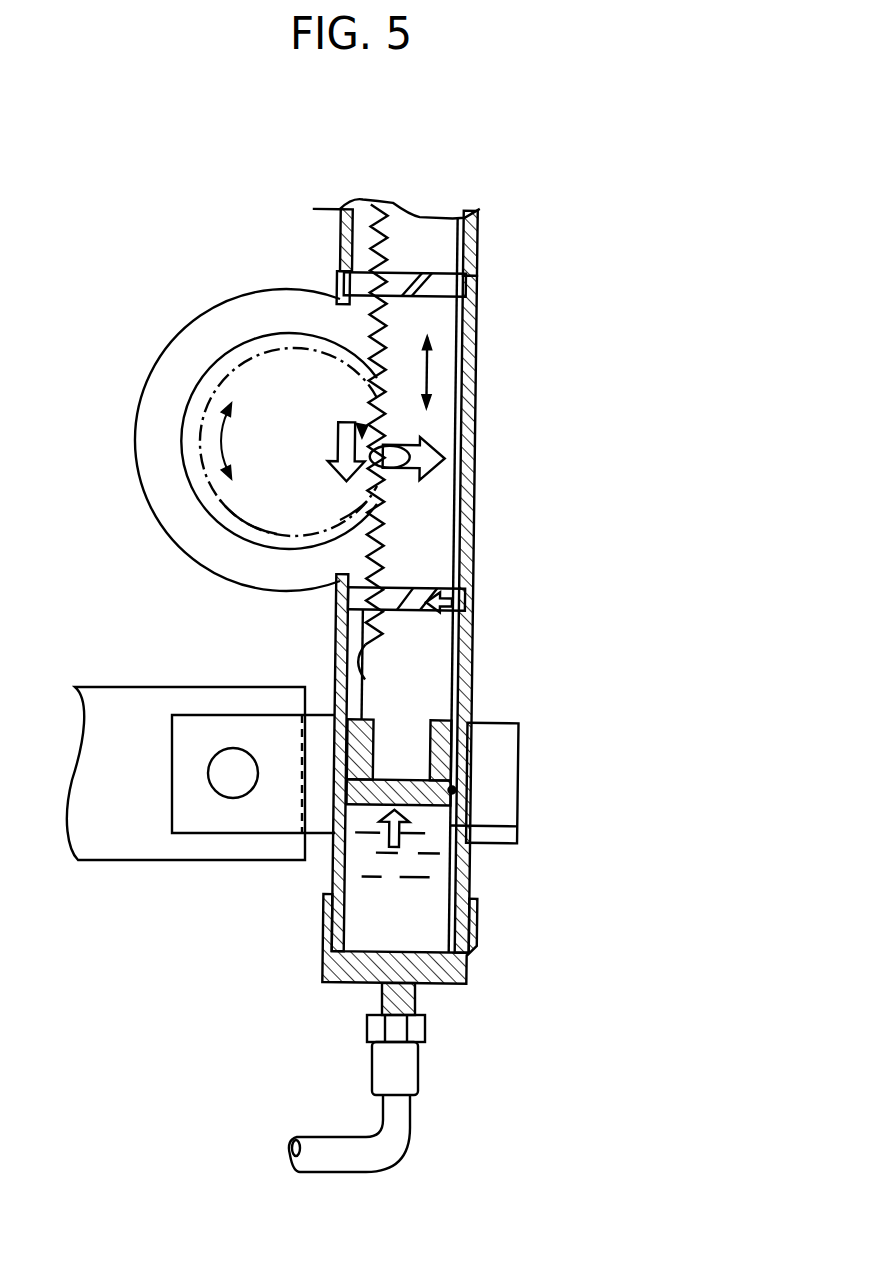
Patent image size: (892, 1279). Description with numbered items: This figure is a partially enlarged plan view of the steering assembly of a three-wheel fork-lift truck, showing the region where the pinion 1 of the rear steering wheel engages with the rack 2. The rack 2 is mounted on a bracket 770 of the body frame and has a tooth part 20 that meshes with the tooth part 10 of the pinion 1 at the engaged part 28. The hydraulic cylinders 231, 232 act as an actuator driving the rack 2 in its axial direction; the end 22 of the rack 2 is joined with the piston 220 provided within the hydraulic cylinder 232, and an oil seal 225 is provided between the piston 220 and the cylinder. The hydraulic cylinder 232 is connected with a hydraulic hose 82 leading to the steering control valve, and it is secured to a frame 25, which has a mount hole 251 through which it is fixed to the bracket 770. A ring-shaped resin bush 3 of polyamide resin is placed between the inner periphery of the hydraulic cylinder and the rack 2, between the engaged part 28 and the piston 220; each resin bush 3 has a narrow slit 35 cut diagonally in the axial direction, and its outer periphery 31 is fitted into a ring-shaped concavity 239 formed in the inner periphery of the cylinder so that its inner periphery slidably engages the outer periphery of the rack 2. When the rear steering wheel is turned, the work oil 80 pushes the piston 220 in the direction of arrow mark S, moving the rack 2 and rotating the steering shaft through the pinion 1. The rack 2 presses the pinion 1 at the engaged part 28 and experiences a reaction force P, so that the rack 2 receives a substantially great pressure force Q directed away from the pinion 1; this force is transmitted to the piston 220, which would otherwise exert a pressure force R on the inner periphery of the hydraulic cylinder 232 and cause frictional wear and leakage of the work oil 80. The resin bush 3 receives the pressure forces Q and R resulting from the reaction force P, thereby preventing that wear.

The pinion 1 is at (170, 530).
The rack 2 is at (427, 540).
The resin bush 3 is at (473, 337).
The tooth part 10 is at (377, 490).
The tooth part 20 is at (365, 690).
The end 22 is at (445, 760).
The piston 220 is at (462, 825).
The oil seal 225 is at (452, 790).
The hydraulic cylinder 231 is at (480, 236).
The hydraulic cylinder 232 is at (325, 880).
The ring-shaped concavity 239 is at (362, 274).
The frame 25 is at (197, 815).
The mount hole 251 is at (232, 772).
The engaged part 28 is at (360, 430).
The outer periphery 31 is at (340, 268).
The slit 35 is at (417, 275).
The bracket 770 is at (100, 695).
The work oil 80 is at (410, 878).
The hydraulic hose 82 is at (330, 1152).
The reaction force P is at (348, 440).
The pressure force Q is at (445, 447).
The pressure force R is at (453, 606).
The arrow mark S is at (455, 846).